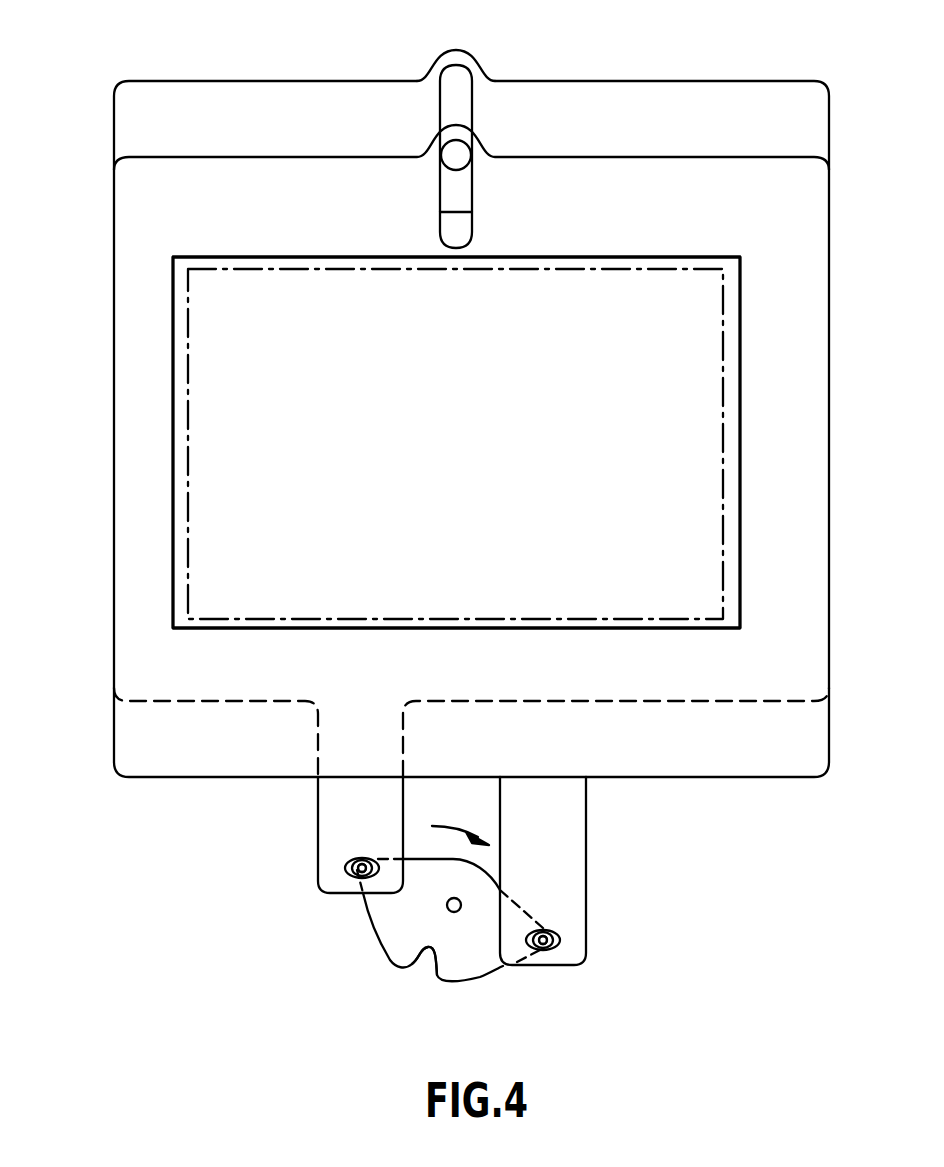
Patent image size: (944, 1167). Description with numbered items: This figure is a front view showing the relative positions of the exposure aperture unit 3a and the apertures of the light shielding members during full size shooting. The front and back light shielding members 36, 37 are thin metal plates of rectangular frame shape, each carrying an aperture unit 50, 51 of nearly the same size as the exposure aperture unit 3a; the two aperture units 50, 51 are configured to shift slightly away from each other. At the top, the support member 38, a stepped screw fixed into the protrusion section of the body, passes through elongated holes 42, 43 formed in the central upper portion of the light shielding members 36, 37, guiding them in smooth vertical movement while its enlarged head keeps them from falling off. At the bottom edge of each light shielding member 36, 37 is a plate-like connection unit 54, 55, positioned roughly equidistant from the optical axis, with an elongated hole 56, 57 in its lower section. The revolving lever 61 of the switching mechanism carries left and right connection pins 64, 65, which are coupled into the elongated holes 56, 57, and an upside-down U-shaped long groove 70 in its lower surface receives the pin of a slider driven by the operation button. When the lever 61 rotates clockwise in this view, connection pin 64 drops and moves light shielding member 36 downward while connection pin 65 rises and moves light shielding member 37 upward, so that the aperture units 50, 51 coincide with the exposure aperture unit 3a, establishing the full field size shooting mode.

The front light shielding member 36 is at (148, 157).
The back light shielding member 37 is at (225, 80).
The support member 38 is at (456, 155).
The elongated hole 42 is at (472, 211).
The elongated hole 43 is at (470, 84).
The exposure aperture unit 3a is at (722, 420).
The aperture unit 50 is at (740, 487).
The aperture unit 51 is at (456, 442).
The connection unit 54 is at (586, 845).
The connection unit 55 is at (317, 820).
The elongated hole 56 is at (560, 936).
The elongated hole 57 is at (345, 867).
The revolving lever 61 is at (379, 942).
The connection pin 64 is at (543, 947).
The connection pin 65 is at (360, 868).
The long groove 70 is at (424, 960).